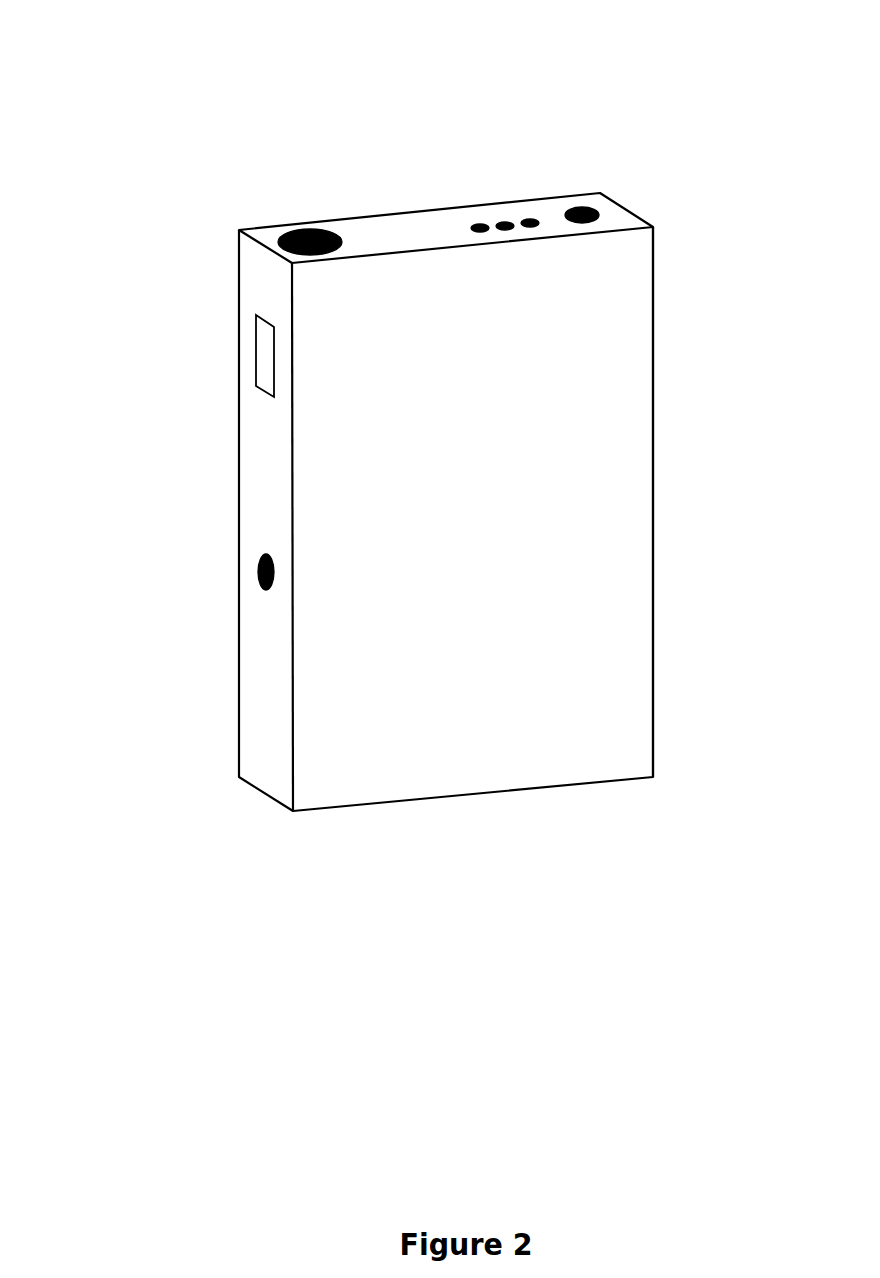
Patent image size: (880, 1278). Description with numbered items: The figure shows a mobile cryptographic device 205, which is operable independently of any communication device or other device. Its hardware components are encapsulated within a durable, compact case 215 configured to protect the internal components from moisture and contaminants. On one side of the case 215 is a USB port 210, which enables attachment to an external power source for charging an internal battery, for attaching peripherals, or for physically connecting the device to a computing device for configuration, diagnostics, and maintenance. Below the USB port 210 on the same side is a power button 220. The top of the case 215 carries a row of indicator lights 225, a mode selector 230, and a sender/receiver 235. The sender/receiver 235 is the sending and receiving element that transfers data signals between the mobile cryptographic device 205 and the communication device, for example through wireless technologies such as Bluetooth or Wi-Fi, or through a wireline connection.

The mobile cryptographic device 205 is at (446, 502).
The USB port 210 is at (267, 348).
The case 215 is at (654, 402).
The power button 220 is at (258, 573).
The indicator lights 225 is at (496, 227).
The mode selector 230 is at (581, 210).
The sender/receiver 235 is at (308, 230).